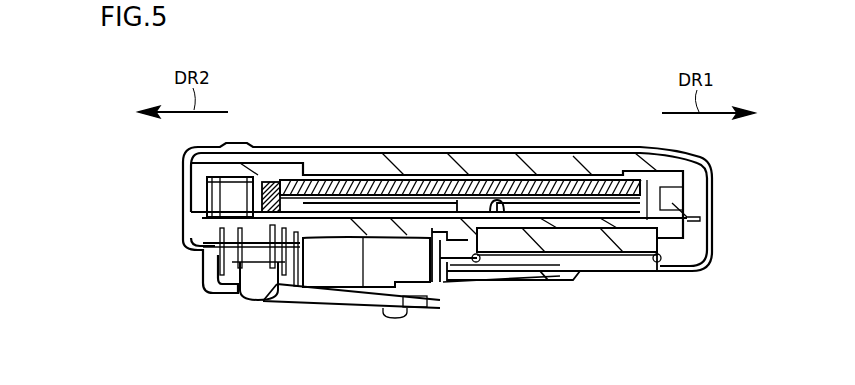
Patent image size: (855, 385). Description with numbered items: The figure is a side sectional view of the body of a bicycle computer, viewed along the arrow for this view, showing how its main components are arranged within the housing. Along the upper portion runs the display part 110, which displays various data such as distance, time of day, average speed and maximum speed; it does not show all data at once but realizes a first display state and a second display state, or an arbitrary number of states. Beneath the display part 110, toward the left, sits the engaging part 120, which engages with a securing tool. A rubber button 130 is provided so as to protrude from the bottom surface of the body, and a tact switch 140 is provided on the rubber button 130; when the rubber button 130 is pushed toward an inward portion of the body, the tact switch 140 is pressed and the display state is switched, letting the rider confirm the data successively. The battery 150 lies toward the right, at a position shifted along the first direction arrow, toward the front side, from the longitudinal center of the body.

The display part 110 is at (558, 193).
The engaging part 120 is at (335, 293).
The rubber button 130 is at (258, 293).
The tact switch 140 is at (240, 223).
The battery 150 is at (595, 240).